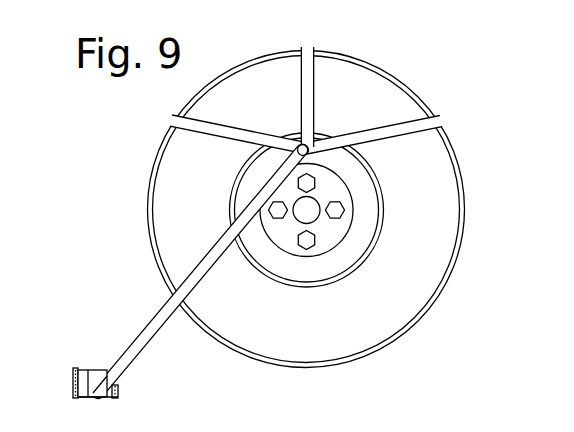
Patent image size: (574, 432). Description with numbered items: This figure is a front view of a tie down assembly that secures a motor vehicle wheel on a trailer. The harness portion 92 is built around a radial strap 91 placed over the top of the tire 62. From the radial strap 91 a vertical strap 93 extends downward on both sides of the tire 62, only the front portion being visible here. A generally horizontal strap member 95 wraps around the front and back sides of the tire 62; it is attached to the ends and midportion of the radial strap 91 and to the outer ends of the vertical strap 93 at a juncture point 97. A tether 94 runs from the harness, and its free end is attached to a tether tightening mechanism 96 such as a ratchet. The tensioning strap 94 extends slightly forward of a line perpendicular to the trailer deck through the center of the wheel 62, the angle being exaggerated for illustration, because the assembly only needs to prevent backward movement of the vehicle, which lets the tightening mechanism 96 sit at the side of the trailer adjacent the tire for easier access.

The tire 62 is at (462, 256).
The radial strap 91 is at (338, 51).
The harness portion 92 is at (442, 60).
The vertical strap 93 is at (308, 108).
The tether 94 is at (165, 318).
The horizontal strap member 95 is at (383, 136).
The tether tightening mechanism 96 is at (83, 368).
The juncture point 97 is at (298, 136).